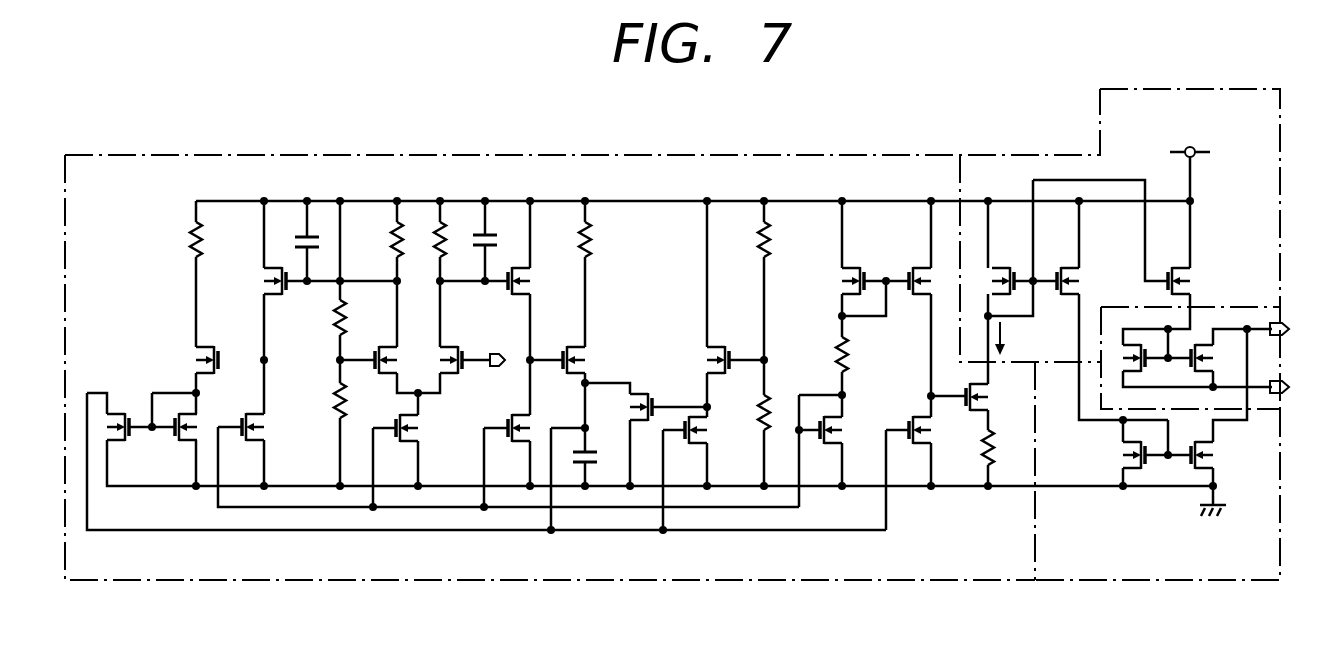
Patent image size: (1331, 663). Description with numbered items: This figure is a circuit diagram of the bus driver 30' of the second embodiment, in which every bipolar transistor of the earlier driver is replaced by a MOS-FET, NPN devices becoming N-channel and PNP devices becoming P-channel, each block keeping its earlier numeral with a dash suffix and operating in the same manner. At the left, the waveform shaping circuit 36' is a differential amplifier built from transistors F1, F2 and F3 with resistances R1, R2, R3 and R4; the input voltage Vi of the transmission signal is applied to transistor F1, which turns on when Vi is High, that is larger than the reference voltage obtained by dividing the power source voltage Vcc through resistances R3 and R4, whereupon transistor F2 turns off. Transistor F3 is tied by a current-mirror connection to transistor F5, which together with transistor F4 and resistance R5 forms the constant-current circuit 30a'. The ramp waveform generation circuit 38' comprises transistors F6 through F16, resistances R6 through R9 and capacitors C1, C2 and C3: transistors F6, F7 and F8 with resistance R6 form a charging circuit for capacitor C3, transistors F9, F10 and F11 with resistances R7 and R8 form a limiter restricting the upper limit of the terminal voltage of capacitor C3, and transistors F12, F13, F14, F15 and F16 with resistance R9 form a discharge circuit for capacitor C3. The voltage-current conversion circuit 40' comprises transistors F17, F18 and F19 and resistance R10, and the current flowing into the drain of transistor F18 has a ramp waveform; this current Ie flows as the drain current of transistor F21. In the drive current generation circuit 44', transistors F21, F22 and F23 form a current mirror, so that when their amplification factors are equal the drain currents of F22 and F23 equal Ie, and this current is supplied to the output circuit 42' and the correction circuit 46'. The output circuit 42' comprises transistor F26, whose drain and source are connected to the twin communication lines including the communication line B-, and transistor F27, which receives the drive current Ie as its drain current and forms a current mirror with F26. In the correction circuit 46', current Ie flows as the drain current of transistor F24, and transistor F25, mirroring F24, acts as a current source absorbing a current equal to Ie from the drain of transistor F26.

The bus driver 30' is at (1030, 341).
The waveform shaping circuit 36' is at (582, 334).
The ramp waveform generation circuit 38' is at (582, 334).
The voltage-current conversion circuit 40' is at (582, 334).
The constant-current circuit 30a' is at (582, 334).
The output circuit 42' is at (1215, 350).
The drive current generation circuit 44' is at (1214, 209).
The correction circuit 46' is at (1182, 494).
The resistance R1 is at (450, 228).
The resistance R2 is at (380, 235).
The resistance R3 is at (338, 318).
The resistance R4 is at (350, 405).
The resistance R5 is at (854, 362).
The resistance R6 is at (609, 236).
The resistance R7 is at (789, 236).
The resistance R8 is at (781, 395).
The resistance R9 is at (221, 235).
The resistance R10 is at (1000, 465).
The capacitor C1 is at (495, 228).
The capacitor C2 is at (294, 235).
The capacitor C3 is at (600, 440).
The field effect transistor F1 is at (459, 345).
The field effect transistor F2 is at (381, 345).
The field effect transistor F3 is at (422, 428).
The field effect transistor F4 is at (844, 282).
The field effect transistor F5 is at (849, 420).
The field effect transistor F6 is at (538, 270).
The field effect transistor F7 is at (592, 352).
The field effect transistor F8 is at (537, 419).
The field effect transistor F9 is at (654, 391).
The field effect transistor F10 is at (733, 340).
The field effect transistor F11 is at (714, 436).
The field effect transistor F12 is at (263, 283).
The field effect transistor F13 is at (227, 344).
The field effect transistor F14 is at (278, 417).
The field effect transistor F15 is at (211, 417).
The field effect transistor F16 is at (129, 406).
The field effect transistor F17 is at (940, 440).
The field effect transistor F18 is at (998, 392).
The field effect transistor F19 is at (906, 268).
The field effect transistor F21 is at (1014, 265).
The field effect transistor F22 is at (1205, 266).
The field effect transistor F23 is at (1093, 266).
The field effect transistor F24 is at (1122, 455).
The field effect transistor F25 is at (1216, 455).
The field effect transistor F26 is at (1203, 336).
The field effect transistor F27 is at (1110, 336).
The input voltage Vi is at (499, 341).
The power source voltage Vcc is at (1190, 136).
The drive current Ie is at (1012, 338).
The communication line B- is at (1299, 390).